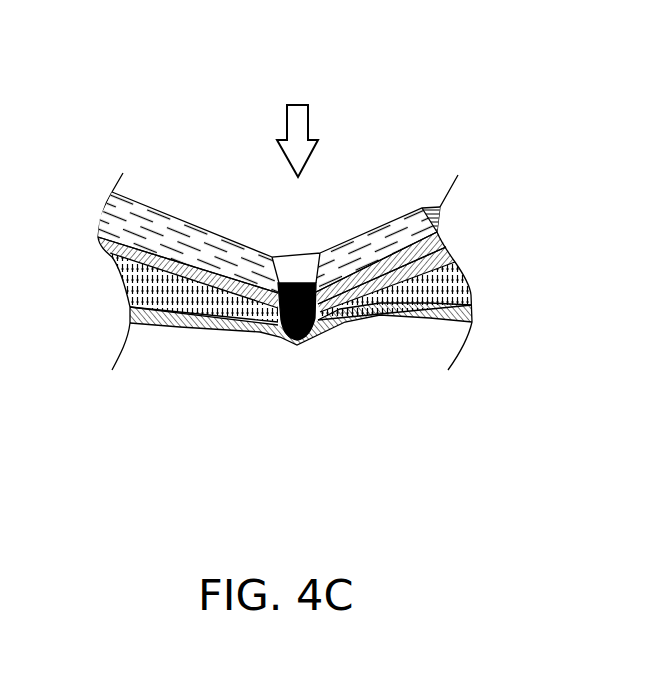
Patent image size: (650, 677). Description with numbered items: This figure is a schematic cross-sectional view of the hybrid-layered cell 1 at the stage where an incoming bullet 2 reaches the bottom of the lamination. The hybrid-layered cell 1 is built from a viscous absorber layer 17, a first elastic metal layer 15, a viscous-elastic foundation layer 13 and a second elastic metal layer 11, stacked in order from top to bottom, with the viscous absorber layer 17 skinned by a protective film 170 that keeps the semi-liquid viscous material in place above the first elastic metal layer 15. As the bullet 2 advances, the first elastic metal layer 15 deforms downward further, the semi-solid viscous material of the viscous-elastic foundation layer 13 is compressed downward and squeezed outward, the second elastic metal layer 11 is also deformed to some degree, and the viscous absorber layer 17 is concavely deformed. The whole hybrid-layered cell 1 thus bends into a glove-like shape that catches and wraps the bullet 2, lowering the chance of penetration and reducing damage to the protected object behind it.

The hybrid-layered cell 1 is at (78, 152).
The bullet 2 is at (300, 257).
The protective film 170 is at (425, 207).
The viscous absorber layer 17 is at (437, 237).
The first elastic metal layer 15 is at (450, 260).
The viscous-elastic foundation layer 13 is at (443, 300).
The second elastic metal layer 11 is at (468, 320).